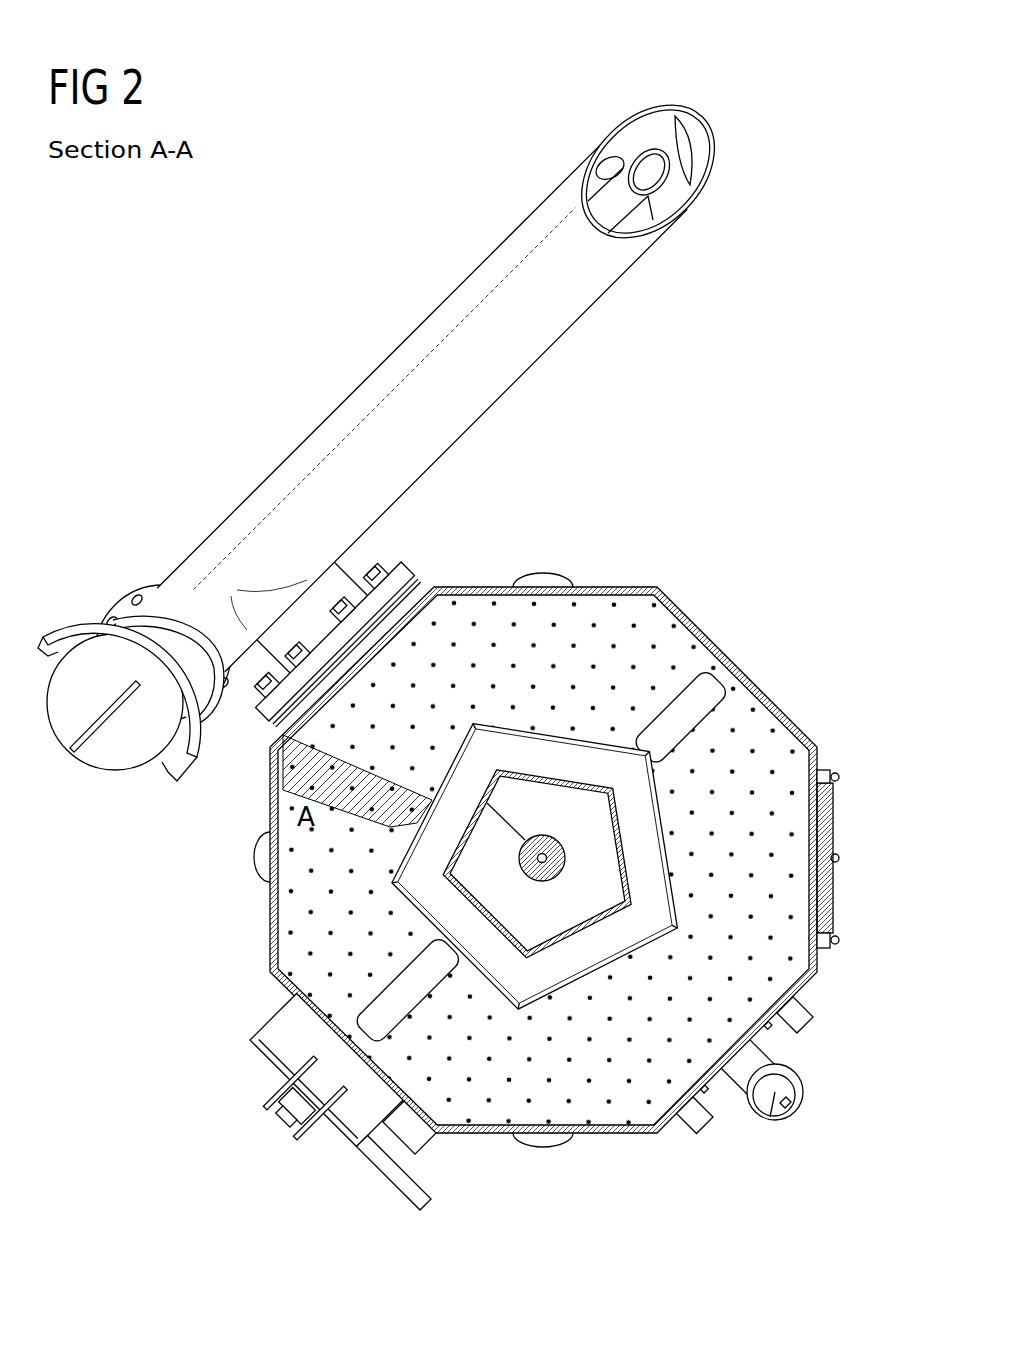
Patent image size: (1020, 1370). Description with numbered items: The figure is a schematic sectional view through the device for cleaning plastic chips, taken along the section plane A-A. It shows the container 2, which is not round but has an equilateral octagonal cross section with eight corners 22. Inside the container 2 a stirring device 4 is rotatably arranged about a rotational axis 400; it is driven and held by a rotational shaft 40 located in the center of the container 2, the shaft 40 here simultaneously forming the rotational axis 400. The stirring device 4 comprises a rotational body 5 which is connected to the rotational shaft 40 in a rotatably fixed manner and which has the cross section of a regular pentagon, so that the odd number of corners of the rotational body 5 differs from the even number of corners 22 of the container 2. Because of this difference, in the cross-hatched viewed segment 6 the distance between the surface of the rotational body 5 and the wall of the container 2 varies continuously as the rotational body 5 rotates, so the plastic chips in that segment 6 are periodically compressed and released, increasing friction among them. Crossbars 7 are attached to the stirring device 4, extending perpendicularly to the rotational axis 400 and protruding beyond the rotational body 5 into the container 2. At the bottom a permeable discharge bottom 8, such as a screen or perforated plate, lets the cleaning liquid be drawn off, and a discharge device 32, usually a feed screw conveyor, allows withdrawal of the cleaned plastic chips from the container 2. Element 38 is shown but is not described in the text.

The container 2 is at (706, 622).
The corners 22 is at (814, 748).
The stirring device 4 is at (668, 808).
The rotational axis 400 is at (548, 842).
The rotational shaft 40 is at (541, 870).
The crossbars 7 is at (650, 742).
The viewed segment 6 is at (282, 768).
The rotational body 5 is at (600, 957).
The discharge bottom 8 is at (788, 977).
The discharge device 32 is at (596, 318).
The pipe stub 38 is at (401, 1181).